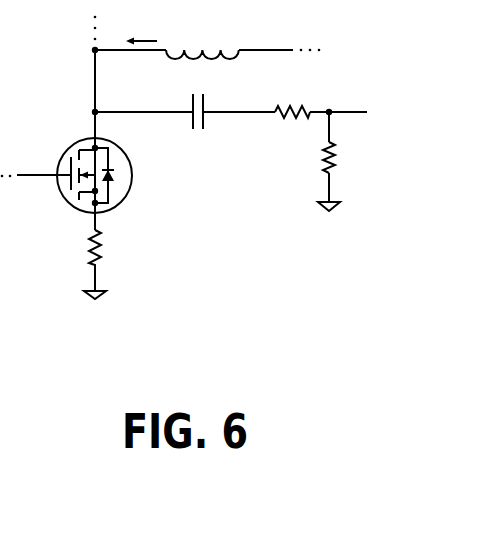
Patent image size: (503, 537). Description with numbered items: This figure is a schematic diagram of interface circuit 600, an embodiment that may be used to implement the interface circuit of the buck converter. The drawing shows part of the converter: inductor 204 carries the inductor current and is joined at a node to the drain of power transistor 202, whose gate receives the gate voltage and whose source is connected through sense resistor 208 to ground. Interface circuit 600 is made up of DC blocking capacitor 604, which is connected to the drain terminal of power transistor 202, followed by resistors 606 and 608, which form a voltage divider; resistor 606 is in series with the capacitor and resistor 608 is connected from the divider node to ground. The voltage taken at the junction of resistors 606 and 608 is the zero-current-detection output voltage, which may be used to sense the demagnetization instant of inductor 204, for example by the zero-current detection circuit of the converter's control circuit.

The interface circuit 600 is at (353, 220).
The inductor 204 is at (203, 48).
The power transistor 202 is at (62, 196).
The sense resistor 208 is at (107, 229).
The DC blocking capacitor 604 is at (191, 118).
The resistor 606 is at (279, 118).
The resistor 608 is at (321, 149).